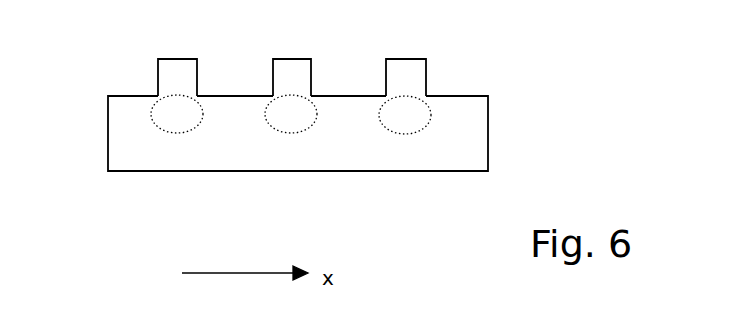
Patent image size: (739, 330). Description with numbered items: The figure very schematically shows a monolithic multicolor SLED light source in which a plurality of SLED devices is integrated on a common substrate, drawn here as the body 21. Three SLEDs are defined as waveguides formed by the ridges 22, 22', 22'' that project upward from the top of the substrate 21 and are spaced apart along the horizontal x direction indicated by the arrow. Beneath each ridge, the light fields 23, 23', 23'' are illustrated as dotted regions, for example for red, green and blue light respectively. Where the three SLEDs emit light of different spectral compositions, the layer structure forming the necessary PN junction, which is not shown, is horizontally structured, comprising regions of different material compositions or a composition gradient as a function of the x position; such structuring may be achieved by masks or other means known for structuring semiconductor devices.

The substrate body 21 is at (462, 135).
The ridge 22 is at (142, 60).
The ridge 22' is at (326, 56).
The ridge 22'' is at (462, 62).
The light field 23 is at (124, 148).
The light field 23' is at (276, 161).
The light field 23'' is at (389, 167).